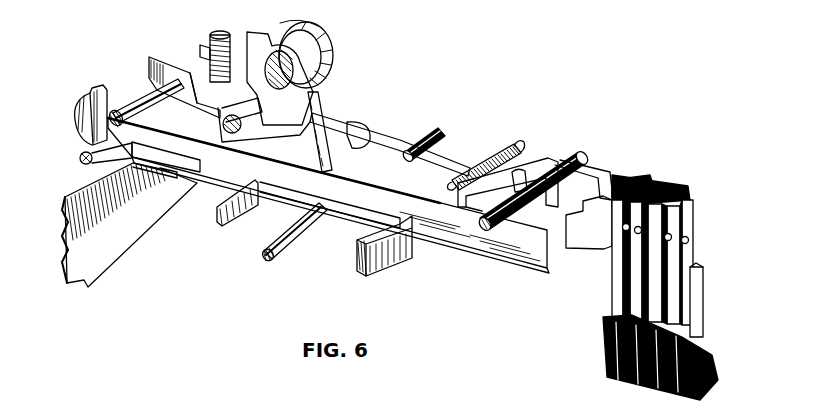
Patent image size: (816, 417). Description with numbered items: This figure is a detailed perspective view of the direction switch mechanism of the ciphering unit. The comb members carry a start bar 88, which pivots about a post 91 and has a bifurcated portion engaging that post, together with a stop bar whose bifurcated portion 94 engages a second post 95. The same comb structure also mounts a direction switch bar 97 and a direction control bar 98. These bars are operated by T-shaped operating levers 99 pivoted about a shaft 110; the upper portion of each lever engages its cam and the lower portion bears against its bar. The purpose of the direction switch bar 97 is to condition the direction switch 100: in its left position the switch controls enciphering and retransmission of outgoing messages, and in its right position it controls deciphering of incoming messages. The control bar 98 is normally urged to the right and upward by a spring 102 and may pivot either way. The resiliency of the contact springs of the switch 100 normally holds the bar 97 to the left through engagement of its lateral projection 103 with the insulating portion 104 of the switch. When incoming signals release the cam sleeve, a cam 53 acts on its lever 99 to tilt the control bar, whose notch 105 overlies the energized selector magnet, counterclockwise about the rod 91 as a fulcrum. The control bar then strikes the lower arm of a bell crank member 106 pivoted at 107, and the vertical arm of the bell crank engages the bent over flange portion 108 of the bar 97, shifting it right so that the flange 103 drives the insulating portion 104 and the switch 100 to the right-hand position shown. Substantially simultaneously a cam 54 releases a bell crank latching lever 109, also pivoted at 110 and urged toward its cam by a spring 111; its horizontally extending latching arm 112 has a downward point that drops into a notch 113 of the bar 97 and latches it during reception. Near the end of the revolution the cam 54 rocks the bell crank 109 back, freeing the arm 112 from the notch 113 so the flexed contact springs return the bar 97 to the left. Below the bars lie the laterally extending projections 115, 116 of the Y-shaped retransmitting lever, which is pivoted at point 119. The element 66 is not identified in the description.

The cam 53 is at (325, 75).
The cam 54 is at (323, 33).
The mounting plate 66 is at (100, 230).
The start bar 88 is at (548, 153).
The post 91 is at (572, 157).
The bifurcated portion 94 is at (163, 53).
The post 95 is at (150, 87).
The direction switch bar 97 is at (597, 197).
The direction control bar 98 is at (493, 247).
The T-shaped operating lever 99 is at (323, 97).
The direction switch 100 is at (673, 185).
The spring 102 is at (488, 145).
The lateral projection 103 is at (625, 188).
The insulating portion 104 is at (683, 190).
The notch 105 is at (166, 158).
The bell crank member 106 is at (90, 100).
The pivot 107 is at (80, 158).
The bent over flange portion 108 is at (117, 92).
The bell crank latching lever 109 is at (248, 33).
The shaft 110 is at (220, 142).
The spring 111 is at (205, 47).
The latching arm 112 is at (347, 115).
The notch 113 is at (345, 163).
The laterally extending projection 115 is at (383, 260).
The laterally extending projection 116 is at (230, 227).
The pivot point 119 is at (292, 250).